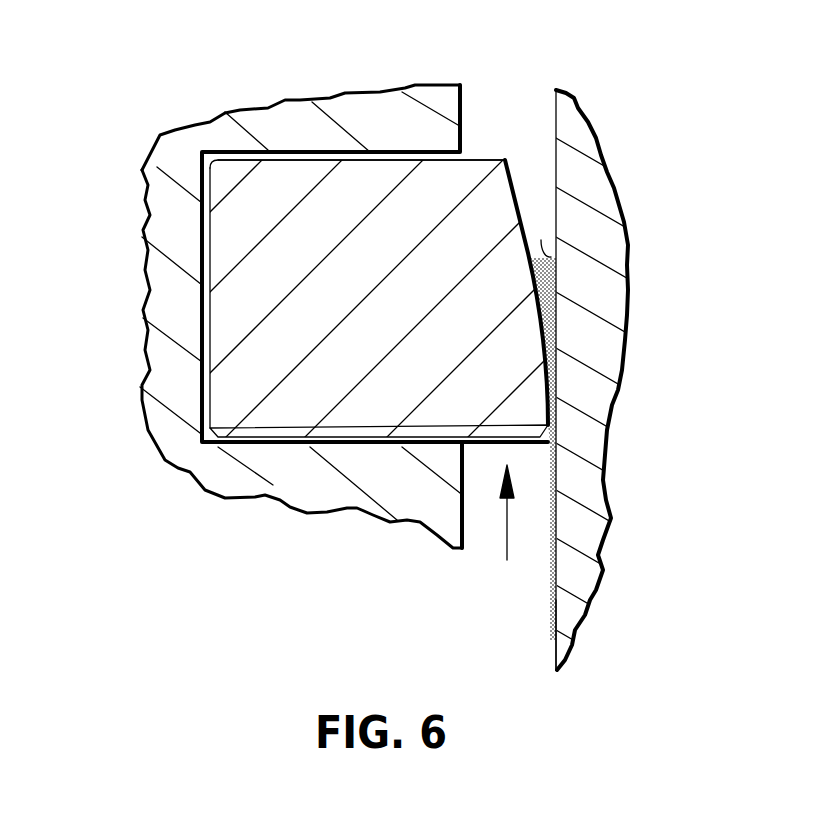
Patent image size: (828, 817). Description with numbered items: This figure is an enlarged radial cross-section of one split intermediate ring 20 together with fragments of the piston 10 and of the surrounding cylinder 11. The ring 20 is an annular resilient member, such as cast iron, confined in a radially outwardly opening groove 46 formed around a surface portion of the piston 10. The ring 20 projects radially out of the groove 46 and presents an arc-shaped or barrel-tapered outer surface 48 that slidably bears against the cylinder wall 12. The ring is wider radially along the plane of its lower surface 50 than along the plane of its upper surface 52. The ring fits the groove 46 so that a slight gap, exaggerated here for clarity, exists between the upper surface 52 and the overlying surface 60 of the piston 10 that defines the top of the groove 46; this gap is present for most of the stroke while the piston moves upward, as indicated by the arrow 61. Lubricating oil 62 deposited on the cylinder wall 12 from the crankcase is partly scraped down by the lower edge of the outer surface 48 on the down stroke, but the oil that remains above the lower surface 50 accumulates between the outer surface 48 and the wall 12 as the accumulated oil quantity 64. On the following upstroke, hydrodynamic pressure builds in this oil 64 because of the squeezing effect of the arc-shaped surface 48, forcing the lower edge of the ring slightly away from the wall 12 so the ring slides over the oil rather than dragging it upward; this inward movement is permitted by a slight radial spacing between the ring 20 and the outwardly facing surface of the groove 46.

The piston 10 is at (276, 475).
The cylinder 11 is at (602, 292).
The cylinder wall 12 is at (556, 626).
The split intermediate ring 20 is at (233, 380).
The groove 46 is at (212, 304).
The outer surface 48 is at (516, 178).
The lower surface 50 is at (353, 447).
The upper surface 52 is at (328, 152).
The overlying surface 60 is at (357, 153).
The arrow 61 is at (507, 545).
The lubricating oil 62 is at (554, 550).
The accumulated oil quantity 64 is at (541, 240).